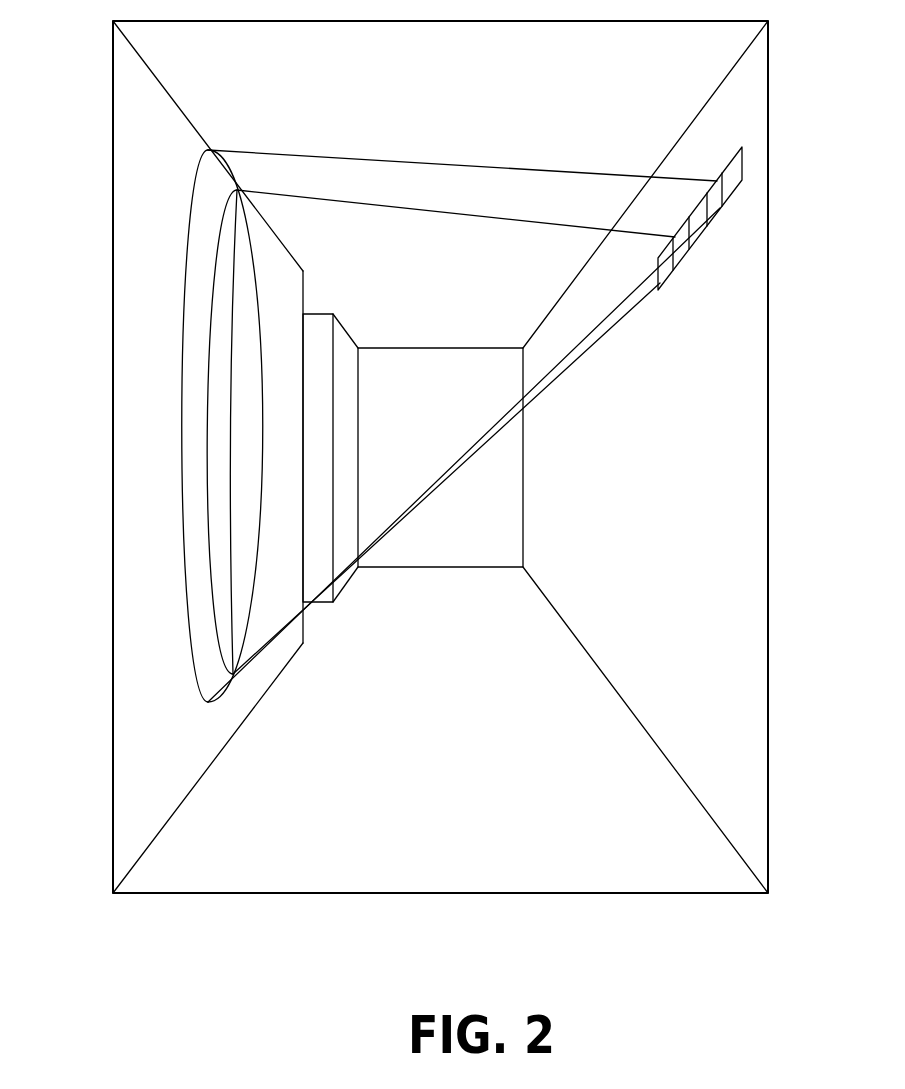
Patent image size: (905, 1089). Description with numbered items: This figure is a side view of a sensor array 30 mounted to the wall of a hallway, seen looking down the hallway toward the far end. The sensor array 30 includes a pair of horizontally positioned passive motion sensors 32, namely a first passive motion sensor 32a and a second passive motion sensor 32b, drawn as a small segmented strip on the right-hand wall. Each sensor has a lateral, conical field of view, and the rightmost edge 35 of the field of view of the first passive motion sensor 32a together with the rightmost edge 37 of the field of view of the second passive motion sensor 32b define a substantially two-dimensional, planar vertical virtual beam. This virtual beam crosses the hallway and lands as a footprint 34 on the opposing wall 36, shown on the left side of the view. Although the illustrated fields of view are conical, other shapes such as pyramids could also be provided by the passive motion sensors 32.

The sensor array 30 is at (749, 118).
The passive motion sensors 32 is at (685, 308).
The first passive motion sensor 32a is at (661, 292).
The second passive motion sensor 32b is at (723, 214).
The footprint 34 is at (250, 440).
The rightmost edge of the field of view of the first passive motion sensor 35 is at (233, 390).
The opposing wall 36 is at (143, 297).
The rightmost edge of the field of view of the second passive motion sensor 37 is at (258, 533).